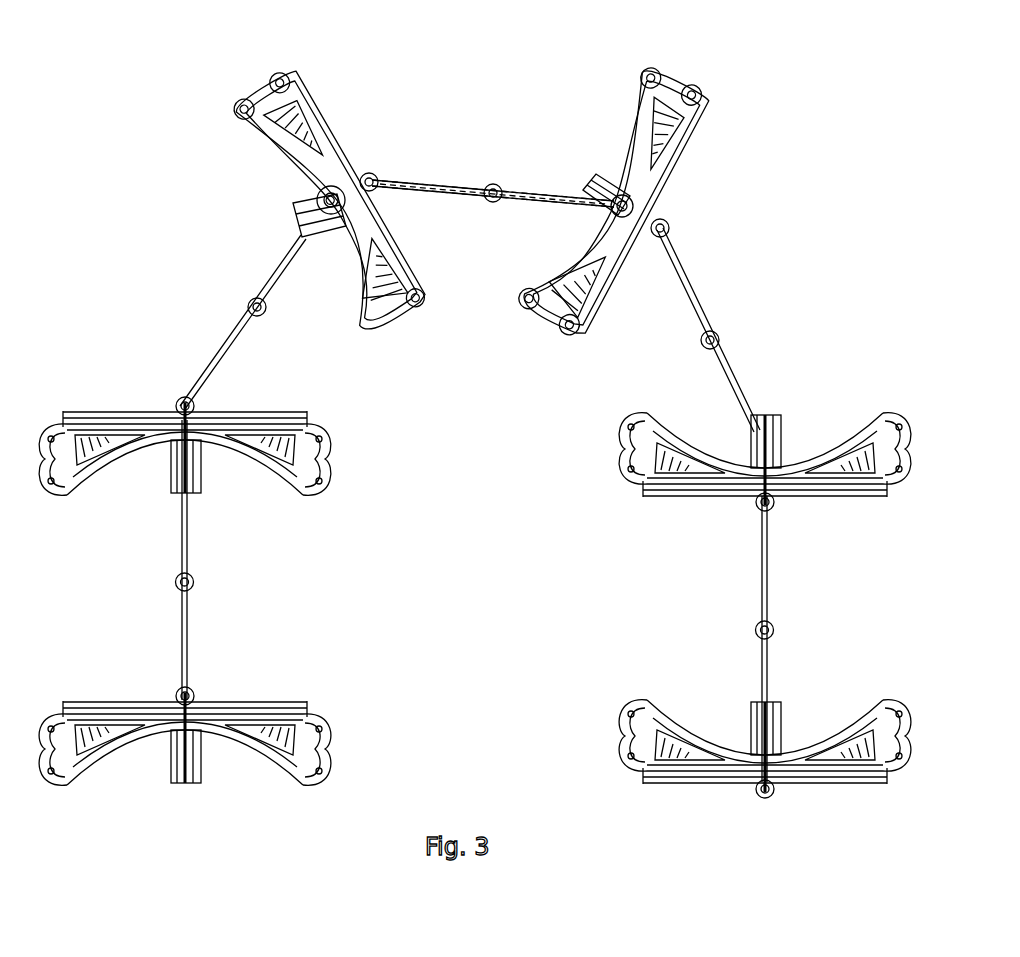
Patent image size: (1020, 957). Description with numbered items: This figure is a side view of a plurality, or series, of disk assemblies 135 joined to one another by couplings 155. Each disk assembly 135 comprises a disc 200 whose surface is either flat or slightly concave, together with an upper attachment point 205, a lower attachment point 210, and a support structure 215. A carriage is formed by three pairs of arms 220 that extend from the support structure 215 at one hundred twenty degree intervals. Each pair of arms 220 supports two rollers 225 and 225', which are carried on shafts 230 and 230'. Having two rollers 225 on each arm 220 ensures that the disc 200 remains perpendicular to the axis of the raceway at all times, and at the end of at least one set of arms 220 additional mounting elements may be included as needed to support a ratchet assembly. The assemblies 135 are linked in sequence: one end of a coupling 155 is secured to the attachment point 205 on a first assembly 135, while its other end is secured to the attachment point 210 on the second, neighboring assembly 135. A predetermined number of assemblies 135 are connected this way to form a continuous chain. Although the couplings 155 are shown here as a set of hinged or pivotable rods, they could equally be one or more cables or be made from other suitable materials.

The disk assembly 135 is at (475, 415).
The coupling 155 is at (470, 185).
The disc 200 is at (316, 99).
The upper attachment point 205 is at (368, 172).
The lower attachment point 210 is at (324, 192).
The support structure 215 is at (443, 209).
The arms 220 is at (270, 130).
The roller 225 is at (287, 64).
The roller 225' is at (246, 175).
The shaft 230 is at (576, 349).
The shaft 230' is at (505, 286).